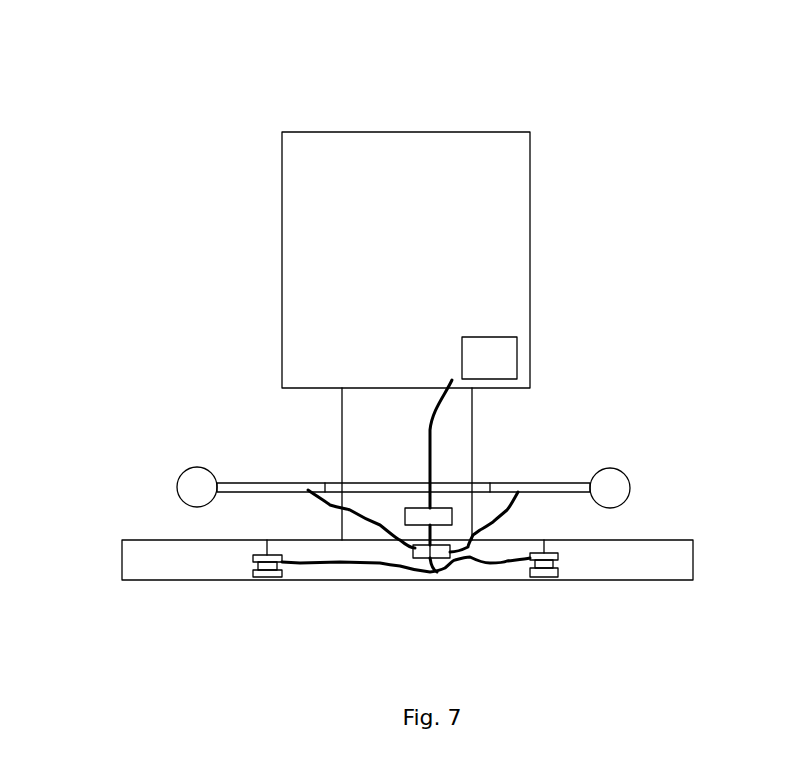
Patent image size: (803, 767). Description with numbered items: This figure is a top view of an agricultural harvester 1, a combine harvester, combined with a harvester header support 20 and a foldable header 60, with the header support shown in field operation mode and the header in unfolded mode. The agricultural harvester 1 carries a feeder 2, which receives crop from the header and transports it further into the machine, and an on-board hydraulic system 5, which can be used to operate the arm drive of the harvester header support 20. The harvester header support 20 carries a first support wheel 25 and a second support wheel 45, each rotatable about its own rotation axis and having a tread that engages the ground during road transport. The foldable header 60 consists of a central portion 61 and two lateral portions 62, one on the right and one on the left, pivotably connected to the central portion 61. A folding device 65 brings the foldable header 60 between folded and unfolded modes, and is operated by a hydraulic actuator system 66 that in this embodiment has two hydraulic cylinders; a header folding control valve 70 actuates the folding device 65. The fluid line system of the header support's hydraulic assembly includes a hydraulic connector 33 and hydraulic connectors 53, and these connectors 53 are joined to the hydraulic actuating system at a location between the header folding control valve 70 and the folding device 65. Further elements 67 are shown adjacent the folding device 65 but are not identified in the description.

The agricultural harvester 1 is at (493, 183).
The feeder 2 is at (360, 430).
The hydraulic system 5 is at (495, 357).
The harvester header support 20 is at (170, 485).
The first support wheel 25 is at (617, 483).
The hydraulic connector 33 is at (453, 552).
The second support wheel 45 is at (203, 485).
The hydraulic connector 53 is at (412, 547).
The foldable header 60 is at (105, 580).
The central portion 61 is at (395, 570).
The lateral portions 62 is at (173, 570).
The folding device 65 is at (265, 592).
The hydraulic actuator system 66 is at (360, 570).
The fastener head 67 is at (253, 560).
The header folding control valve 70 is at (442, 517).